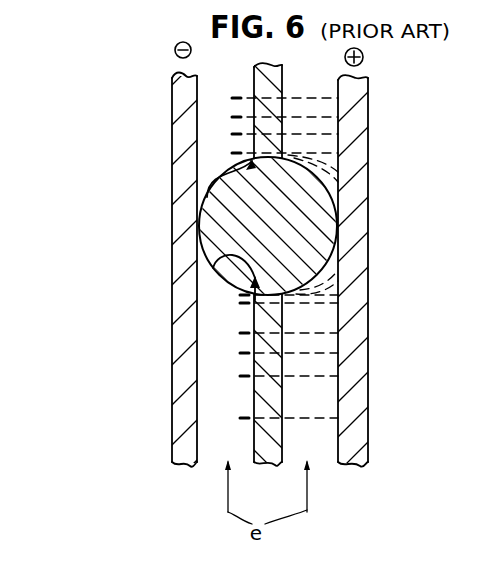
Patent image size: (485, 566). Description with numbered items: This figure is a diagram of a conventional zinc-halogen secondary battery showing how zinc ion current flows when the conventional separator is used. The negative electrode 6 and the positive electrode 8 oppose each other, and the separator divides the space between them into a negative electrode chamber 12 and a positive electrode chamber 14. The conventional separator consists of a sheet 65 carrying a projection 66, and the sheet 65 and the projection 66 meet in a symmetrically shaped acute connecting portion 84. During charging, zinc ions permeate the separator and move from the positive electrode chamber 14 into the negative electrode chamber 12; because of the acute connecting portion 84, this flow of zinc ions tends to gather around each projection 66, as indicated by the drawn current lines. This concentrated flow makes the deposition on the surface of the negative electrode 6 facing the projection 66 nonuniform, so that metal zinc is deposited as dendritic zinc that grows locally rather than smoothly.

The negative electrode 6 is at (176, 342).
The positive electrode 8 is at (357, 382).
The negative electrode chamber 12 is at (222, 418).
The positive electrode chamber 14 is at (312, 440).
The sheet 65 is at (272, 443).
The projection 66 is at (222, 228).
The acute connecting portion 84 is at (207, 197).